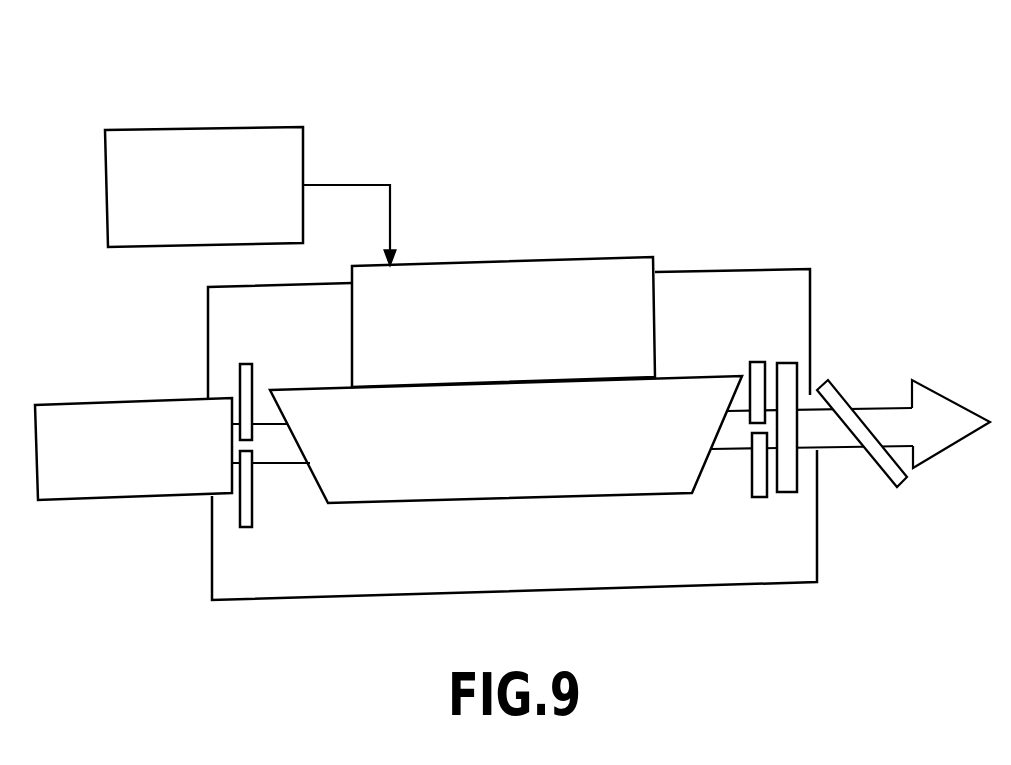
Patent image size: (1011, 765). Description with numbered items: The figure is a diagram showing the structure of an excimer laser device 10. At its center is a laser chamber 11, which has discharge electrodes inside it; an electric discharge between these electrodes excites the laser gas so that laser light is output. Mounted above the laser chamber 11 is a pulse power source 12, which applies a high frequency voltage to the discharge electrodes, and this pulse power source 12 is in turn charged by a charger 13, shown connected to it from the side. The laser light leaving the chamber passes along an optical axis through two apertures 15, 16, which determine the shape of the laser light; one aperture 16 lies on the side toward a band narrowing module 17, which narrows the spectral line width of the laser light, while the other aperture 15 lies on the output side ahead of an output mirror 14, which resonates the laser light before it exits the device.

The excimer laser device 10 is at (475, 106).
The laser chamber 11 is at (538, 485).
The pulse power source 12 is at (480, 262).
The charger 13 is at (199, 127).
The output mirror 14 is at (787, 362).
The aperture 15 is at (750, 360).
The aperture 16 is at (238, 376).
The band narrowing module 17 is at (62, 502).